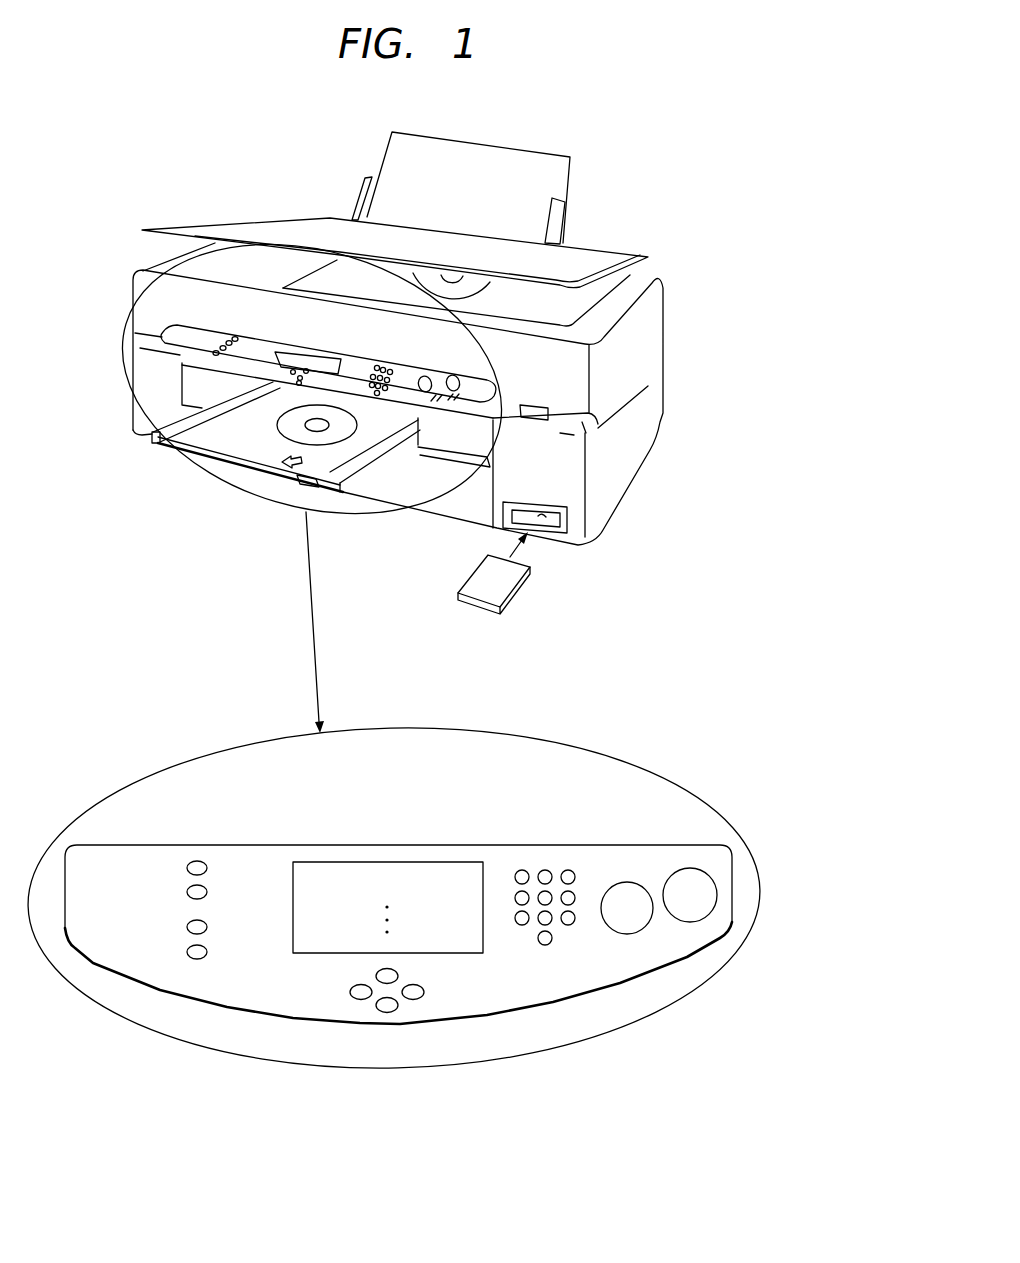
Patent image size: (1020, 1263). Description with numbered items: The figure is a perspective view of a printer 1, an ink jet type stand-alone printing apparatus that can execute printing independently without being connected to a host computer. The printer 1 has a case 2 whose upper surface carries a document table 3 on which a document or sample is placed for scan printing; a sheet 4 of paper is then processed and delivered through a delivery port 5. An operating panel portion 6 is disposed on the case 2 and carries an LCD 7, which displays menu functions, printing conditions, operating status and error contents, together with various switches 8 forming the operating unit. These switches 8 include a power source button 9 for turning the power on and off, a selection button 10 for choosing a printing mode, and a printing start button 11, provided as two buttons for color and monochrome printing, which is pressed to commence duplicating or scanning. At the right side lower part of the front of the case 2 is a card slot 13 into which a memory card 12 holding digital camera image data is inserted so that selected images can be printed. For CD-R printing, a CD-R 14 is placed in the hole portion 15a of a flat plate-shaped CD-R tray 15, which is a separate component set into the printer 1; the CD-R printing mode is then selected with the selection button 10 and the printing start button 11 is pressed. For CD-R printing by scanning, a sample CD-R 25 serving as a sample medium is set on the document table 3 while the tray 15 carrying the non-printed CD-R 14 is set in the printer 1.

The printer 1 is at (612, 222).
The case 2 is at (653, 322).
The document table 3 is at (656, 268).
The sheet 4 is at (546, 160).
The delivery port 5 is at (406, 432).
The operating panel portion 6 is at (252, 320).
The LCD 7 is at (312, 356).
The switches 8 is at (410, 352).
The power source button 9 is at (532, 420).
The selection button 10 is at (209, 338).
The printing start button 11 is at (428, 376).
The memory card 12 is at (525, 590).
The card slot 13 is at (548, 512).
The CD-R 14 is at (350, 435).
The CD-R tray 15 is at (205, 446).
The hole portion 15a is at (285, 412).
The sample CD-R 25 is at (465, 290).